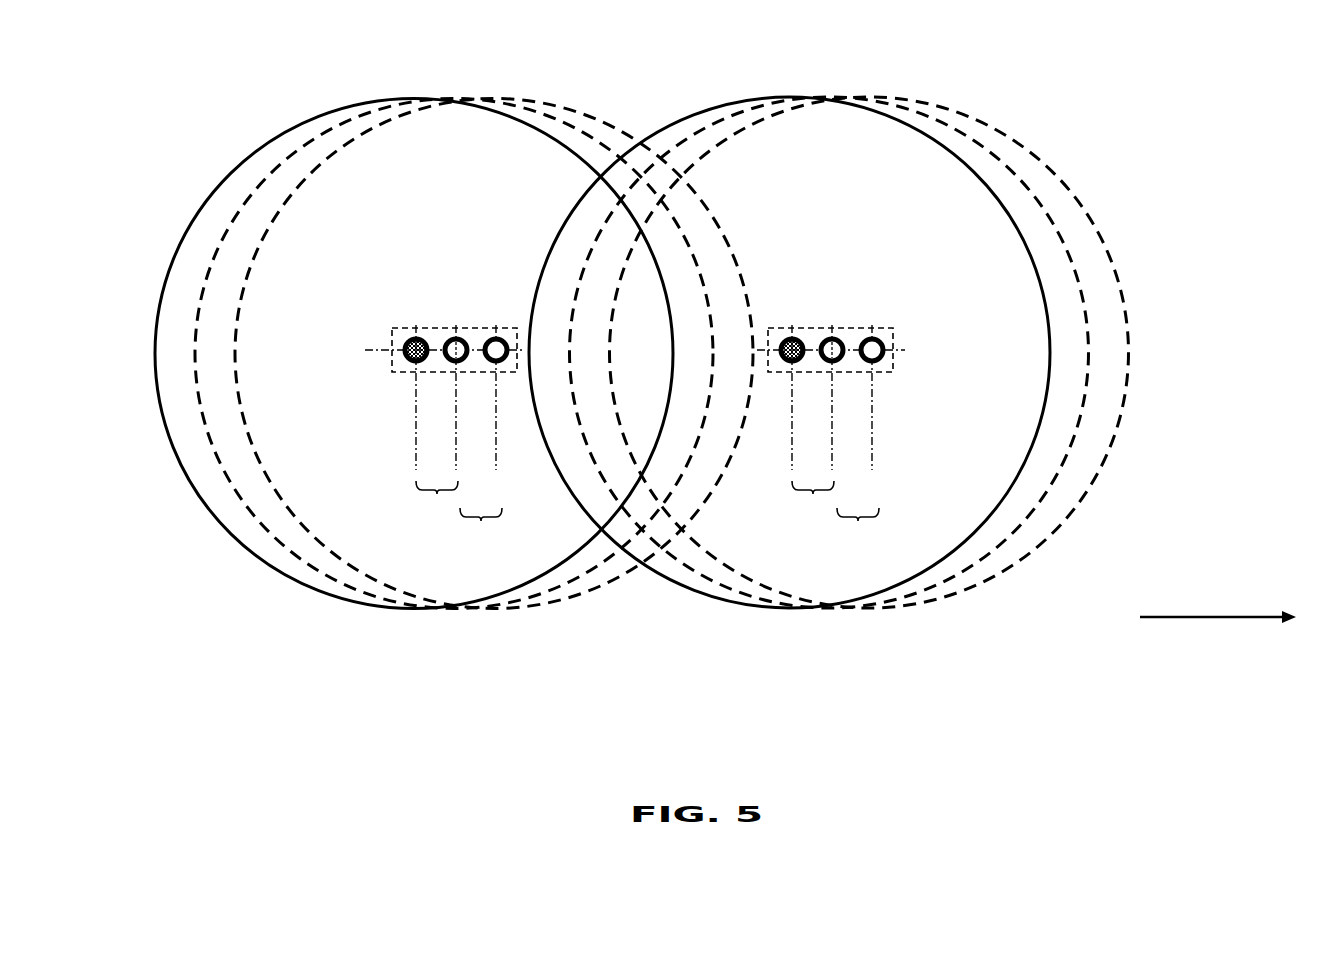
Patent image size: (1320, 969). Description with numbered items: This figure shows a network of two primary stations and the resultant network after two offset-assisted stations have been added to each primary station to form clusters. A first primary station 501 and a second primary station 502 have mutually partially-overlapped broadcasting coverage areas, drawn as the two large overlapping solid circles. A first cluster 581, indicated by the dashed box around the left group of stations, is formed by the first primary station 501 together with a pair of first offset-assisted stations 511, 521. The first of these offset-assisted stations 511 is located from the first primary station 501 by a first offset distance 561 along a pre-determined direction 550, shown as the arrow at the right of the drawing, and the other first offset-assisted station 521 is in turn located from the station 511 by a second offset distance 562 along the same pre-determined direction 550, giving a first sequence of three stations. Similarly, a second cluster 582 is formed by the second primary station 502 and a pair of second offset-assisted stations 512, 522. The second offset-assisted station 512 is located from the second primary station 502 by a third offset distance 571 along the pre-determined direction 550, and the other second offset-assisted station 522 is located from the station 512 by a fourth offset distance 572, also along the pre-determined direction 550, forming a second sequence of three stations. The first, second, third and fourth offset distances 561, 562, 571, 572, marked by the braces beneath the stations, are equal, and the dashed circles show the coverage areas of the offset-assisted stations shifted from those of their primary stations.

The first primary station 501 is at (410, 363).
The first offset-assisted station 511 is at (452, 363).
The first offset-assisted station 521 is at (492, 363).
The second primary station 502 is at (786, 363).
The second offset-assisted station 512 is at (828, 363).
The second offset-assisted station 522 is at (868, 363).
The first offset distance 561 is at (434, 504).
The second offset distance 562 is at (481, 533).
The third offset distance 571 is at (811, 504).
The fourth offset distance 572 is at (858, 533).
The first cluster 581 is at (392, 337).
The second cluster 582 is at (893, 337).
The pre-determined direction 550 is at (1206, 617).